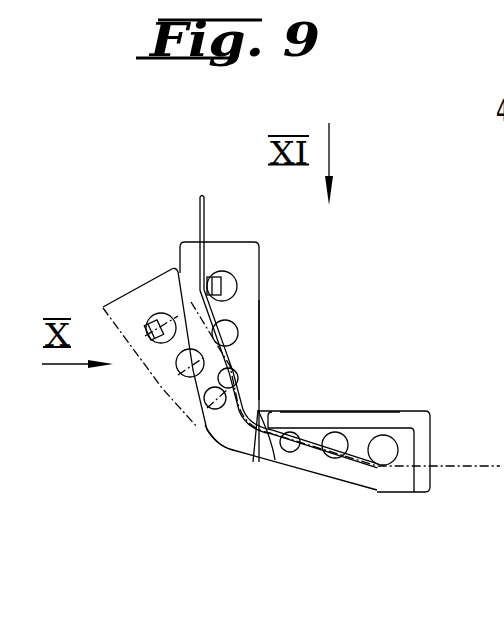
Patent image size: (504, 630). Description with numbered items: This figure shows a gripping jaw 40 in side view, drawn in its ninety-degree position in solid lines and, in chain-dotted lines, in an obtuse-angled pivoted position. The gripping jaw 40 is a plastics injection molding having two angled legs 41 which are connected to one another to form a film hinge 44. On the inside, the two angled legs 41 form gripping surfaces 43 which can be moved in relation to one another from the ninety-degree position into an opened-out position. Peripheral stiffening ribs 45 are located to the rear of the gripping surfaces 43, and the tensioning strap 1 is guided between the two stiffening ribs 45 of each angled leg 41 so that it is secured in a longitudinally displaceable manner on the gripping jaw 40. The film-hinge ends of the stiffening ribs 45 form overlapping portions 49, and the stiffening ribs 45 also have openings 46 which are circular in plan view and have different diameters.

The tensioning strap 1 is at (202, 197).
The gripping jaw 40 is at (150, 210).
The angled leg 41 is at (135, 290).
The gripping surface 43 is at (261, 332).
The film hinge 44 is at (258, 410).
The stiffening rib 45 is at (220, 420).
The opening 46 is at (385, 450).
The overlapping portion 49 is at (228, 443).